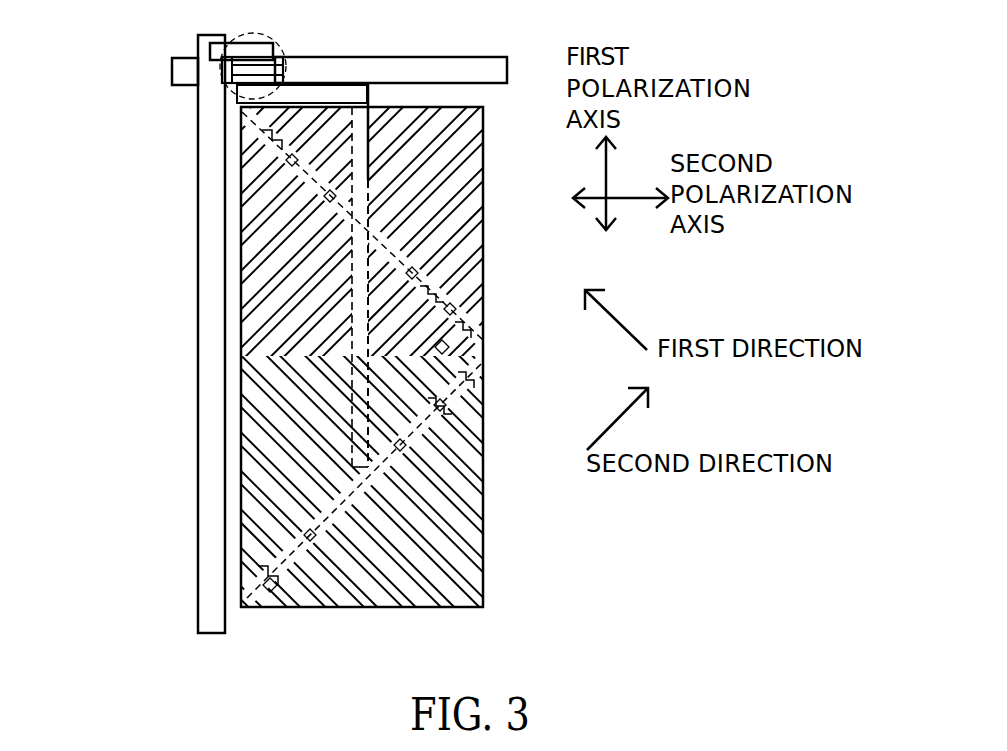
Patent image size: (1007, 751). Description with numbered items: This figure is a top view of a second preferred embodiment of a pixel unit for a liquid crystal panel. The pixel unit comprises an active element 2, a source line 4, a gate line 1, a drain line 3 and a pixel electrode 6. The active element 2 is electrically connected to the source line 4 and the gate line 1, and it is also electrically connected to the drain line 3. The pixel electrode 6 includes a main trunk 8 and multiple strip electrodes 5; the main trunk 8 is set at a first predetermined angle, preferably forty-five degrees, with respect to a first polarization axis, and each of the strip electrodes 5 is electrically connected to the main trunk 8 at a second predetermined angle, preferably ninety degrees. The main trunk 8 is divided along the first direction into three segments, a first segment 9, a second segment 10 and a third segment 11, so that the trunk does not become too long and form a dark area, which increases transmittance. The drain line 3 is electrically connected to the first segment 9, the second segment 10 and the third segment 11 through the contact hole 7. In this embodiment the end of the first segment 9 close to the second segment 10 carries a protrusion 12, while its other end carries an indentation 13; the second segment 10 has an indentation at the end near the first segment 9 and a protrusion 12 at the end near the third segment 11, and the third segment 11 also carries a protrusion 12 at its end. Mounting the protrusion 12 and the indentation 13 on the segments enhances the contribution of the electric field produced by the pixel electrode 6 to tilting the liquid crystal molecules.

The gate line 1 is at (187, 77).
The active element 2 is at (283, 52).
The drain line 3 is at (368, 92).
The source line 4 is at (213, 318).
The strip electrodes 5 is at (270, 181).
The pixel electrode 6 is at (262, 362).
The contact hole 7 is at (335, 192).
The main trunk 8 is at (449, 347).
The first segment 9 is at (300, 162).
The second segment 10 is at (345, 228).
The third segment 11 is at (433, 297).
The protrusion 12 is at (463, 330).
The indentation 13 is at (285, 140).